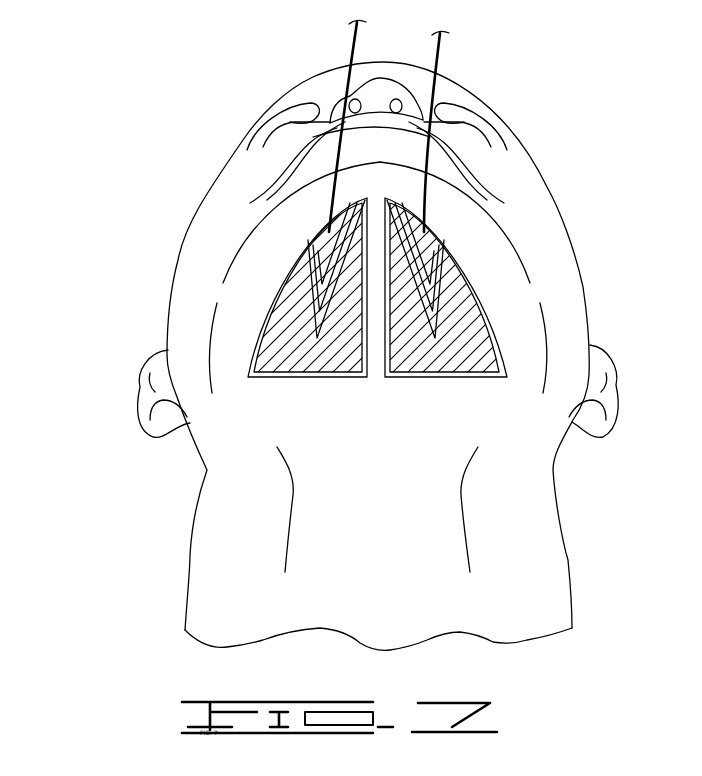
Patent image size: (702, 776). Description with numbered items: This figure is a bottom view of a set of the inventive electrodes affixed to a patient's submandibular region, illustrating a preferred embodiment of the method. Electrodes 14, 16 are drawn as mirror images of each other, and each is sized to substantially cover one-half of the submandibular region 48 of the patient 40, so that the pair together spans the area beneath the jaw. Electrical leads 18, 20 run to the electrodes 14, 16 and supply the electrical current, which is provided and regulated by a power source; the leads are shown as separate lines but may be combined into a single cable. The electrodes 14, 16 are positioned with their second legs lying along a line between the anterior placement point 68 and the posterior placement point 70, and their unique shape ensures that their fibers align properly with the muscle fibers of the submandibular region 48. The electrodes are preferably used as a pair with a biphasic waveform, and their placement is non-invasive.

The electrode 14 is at (273, 320).
The electrode 16 is at (470, 303).
The electrical lead 18 is at (351, 53).
The electrical lead 20 is at (438, 57).
The patient 40 is at (227, 478).
The submandibular region 48 is at (367, 183).
The anterior placement point 68 is at (377, 197).
The posterior placement point 70 is at (377, 377).